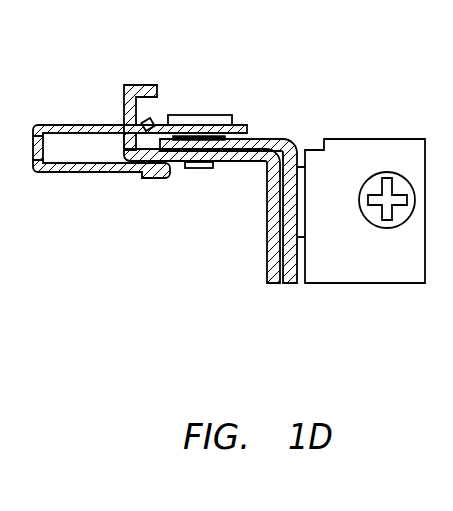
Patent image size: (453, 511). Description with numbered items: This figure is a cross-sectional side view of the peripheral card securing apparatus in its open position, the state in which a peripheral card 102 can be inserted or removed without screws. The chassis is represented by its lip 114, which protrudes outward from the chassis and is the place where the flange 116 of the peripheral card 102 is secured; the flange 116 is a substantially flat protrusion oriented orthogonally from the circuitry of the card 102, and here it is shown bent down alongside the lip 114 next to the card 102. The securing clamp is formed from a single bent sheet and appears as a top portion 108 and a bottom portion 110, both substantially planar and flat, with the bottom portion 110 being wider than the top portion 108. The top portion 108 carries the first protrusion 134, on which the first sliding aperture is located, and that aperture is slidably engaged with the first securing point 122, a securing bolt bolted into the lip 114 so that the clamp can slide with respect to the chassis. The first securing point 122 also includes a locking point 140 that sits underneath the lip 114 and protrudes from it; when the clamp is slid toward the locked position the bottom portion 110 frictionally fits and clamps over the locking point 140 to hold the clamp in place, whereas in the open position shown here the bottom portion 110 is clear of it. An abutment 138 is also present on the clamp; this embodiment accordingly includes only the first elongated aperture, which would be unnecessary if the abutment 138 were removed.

The peripheral card 102 is at (360, 150).
The top portion 108 is at (73, 128).
The bottom portion 110 is at (87, 168).
The lip 114 is at (240, 163).
The flange 116 is at (267, 147).
The first securing point 122 is at (200, 113).
The first protrusion 134 is at (240, 128).
The abutment 138 is at (131, 94).
The locking point 140 is at (200, 170).